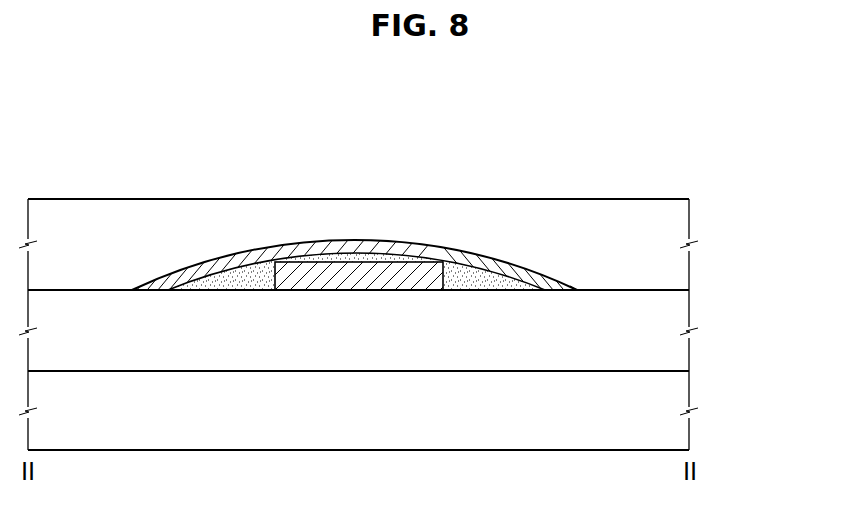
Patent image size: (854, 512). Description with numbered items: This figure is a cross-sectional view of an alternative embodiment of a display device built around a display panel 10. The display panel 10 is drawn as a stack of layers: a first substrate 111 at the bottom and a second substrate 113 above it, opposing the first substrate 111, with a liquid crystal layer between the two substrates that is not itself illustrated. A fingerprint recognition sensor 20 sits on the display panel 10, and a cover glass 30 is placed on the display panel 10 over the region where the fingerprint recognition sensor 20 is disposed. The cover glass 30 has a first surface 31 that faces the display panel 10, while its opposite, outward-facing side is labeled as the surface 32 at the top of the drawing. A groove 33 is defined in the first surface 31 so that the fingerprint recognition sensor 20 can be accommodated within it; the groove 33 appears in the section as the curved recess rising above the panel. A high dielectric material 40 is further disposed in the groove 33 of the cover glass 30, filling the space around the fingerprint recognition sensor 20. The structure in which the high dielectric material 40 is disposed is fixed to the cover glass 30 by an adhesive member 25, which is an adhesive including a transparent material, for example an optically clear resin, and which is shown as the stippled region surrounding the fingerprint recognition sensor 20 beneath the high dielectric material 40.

The display panel 10 is at (779, 305).
The first substrate 111 is at (675, 395).
The second substrate 113 is at (675, 310).
The fingerprint recognition sensor 20 is at (307, 272).
The adhesive member 25 is at (482, 278).
The cover glass 30 is at (675, 223).
The first surface 31 is at (592, 300).
The upper surface of cover layer 32 is at (613, 188).
The groove 33 is at (509, 250).
The high dielectric material 40 is at (360, 240).